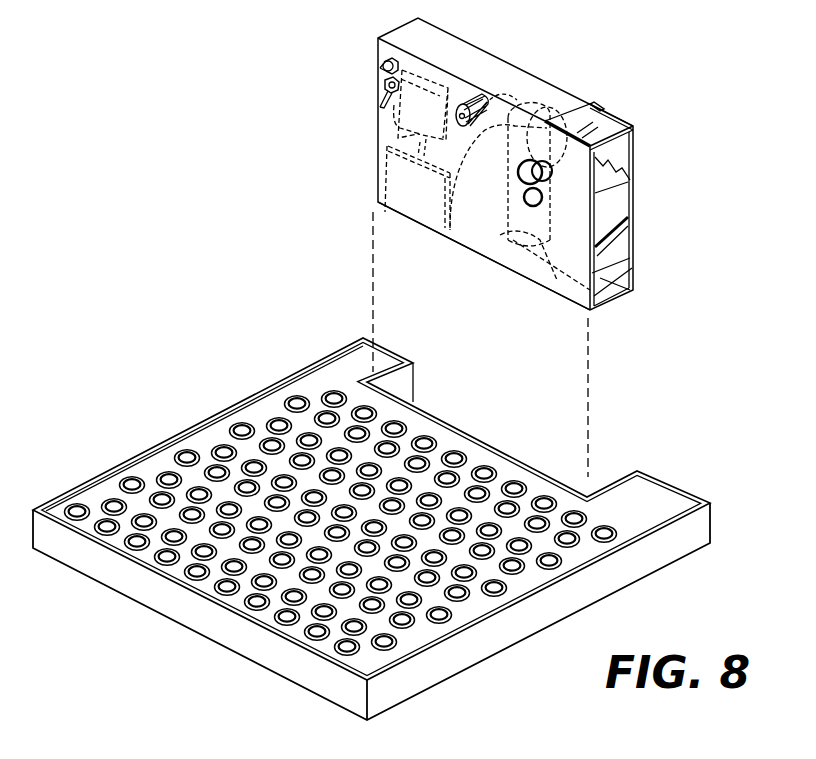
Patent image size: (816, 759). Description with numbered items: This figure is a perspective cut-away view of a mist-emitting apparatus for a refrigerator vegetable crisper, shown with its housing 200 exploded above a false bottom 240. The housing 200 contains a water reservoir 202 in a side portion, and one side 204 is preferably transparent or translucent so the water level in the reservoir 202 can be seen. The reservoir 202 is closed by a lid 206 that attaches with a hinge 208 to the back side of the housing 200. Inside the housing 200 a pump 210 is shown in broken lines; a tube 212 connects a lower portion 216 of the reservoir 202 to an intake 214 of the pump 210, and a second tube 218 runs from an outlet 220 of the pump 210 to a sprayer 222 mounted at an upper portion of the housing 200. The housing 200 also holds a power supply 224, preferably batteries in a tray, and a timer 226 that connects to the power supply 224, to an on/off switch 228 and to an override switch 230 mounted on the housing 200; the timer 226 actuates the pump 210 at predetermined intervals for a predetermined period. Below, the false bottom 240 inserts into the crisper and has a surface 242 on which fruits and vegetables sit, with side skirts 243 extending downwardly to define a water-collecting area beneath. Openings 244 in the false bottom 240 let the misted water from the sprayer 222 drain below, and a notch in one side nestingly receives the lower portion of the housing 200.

The housing 200 is at (478, 68).
The water reservoir 202 is at (582, 286).
The side 204 is at (612, 202).
The lid 206 is at (607, 130).
The hinge 208 is at (595, 113).
The pump 210 is at (512, 208).
The tube 212 is at (568, 288).
The intake 214 is at (565, 275).
The lower portion 216 is at (598, 258).
The second tube 218 is at (530, 248).
The outlet 220 is at (525, 262).
The sprayer 222 is at (477, 98).
The power supply 224 is at (427, 70).
The timer 226 is at (402, 186).
The on/off switch 228 is at (380, 97).
The override switch 230 is at (385, 65).
The false bottom 240 is at (145, 440).
The surface 242 is at (217, 438).
The side skirts 243 is at (152, 590).
The openings 244 is at (227, 595).